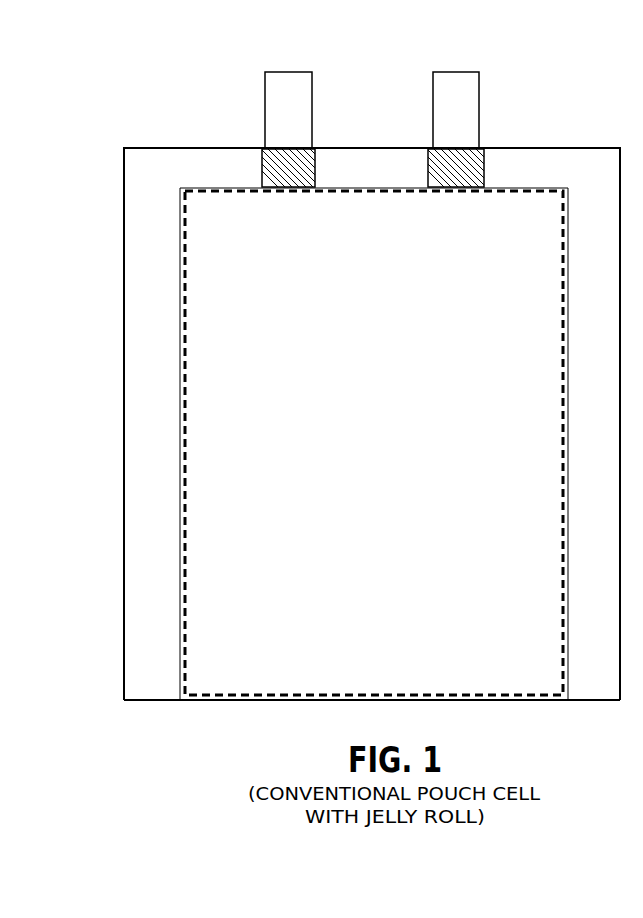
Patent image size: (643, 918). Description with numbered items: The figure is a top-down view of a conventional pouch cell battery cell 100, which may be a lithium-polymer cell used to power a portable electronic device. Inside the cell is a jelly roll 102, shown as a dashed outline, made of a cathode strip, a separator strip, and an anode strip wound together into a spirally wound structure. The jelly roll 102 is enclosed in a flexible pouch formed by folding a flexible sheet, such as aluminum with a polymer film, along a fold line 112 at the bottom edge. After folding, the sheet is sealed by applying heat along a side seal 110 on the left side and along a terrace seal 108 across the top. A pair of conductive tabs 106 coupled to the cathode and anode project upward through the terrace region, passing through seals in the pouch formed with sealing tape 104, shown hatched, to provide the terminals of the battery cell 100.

The battery cell 100 is at (124, 148).
The jelly roll 102 is at (374, 443).
The sealing tape 104 is at (297, 190).
The conductive tabs 106 is at (303, 72).
The terrace seal 108 is at (512, 148).
The side seal 110 is at (124, 417).
The fold line 112 is at (443, 700).